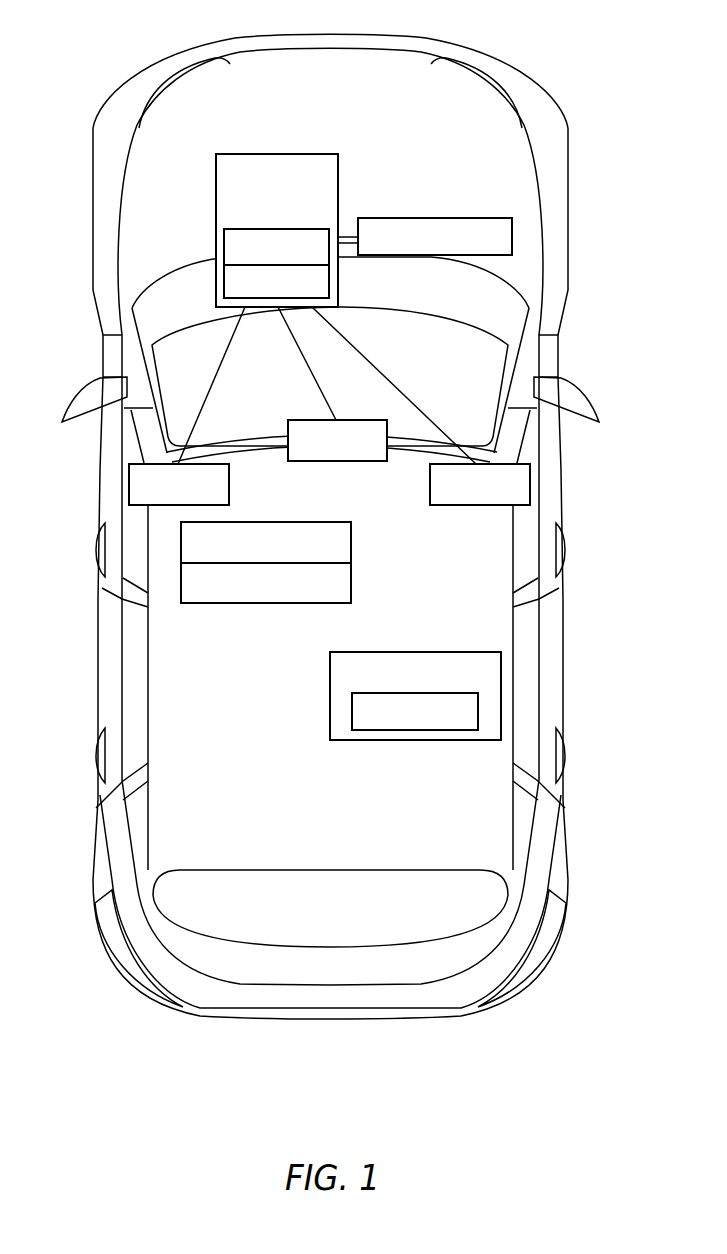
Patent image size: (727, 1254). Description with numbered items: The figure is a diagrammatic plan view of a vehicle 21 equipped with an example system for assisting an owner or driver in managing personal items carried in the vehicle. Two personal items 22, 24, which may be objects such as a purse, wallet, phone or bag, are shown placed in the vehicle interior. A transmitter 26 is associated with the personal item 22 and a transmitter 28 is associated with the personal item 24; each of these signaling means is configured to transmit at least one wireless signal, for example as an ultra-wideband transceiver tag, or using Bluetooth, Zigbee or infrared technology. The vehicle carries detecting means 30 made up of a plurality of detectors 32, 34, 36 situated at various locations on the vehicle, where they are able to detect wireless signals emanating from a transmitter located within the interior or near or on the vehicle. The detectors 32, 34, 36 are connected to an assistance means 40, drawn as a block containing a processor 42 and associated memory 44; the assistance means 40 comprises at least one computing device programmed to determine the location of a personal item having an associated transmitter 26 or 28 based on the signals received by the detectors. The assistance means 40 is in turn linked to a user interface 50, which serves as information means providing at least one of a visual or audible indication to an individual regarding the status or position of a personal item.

The vehicle 21 is at (492, 86).
The personal item 22 is at (351, 542).
The personal item 24 is at (393, 675).
The transmitter 26 is at (351, 581).
The transmitter 28 is at (352, 706).
The detecting means 30 is at (344, 412).
The detector 32 is at (129, 478).
The detector 34 is at (304, 420).
The detector 36 is at (530, 481).
The assistance means 40 is at (267, 212).
The processor 42 is at (224, 241).
The memory 44 is at (224, 283).
The user interface 50 is at (480, 218).